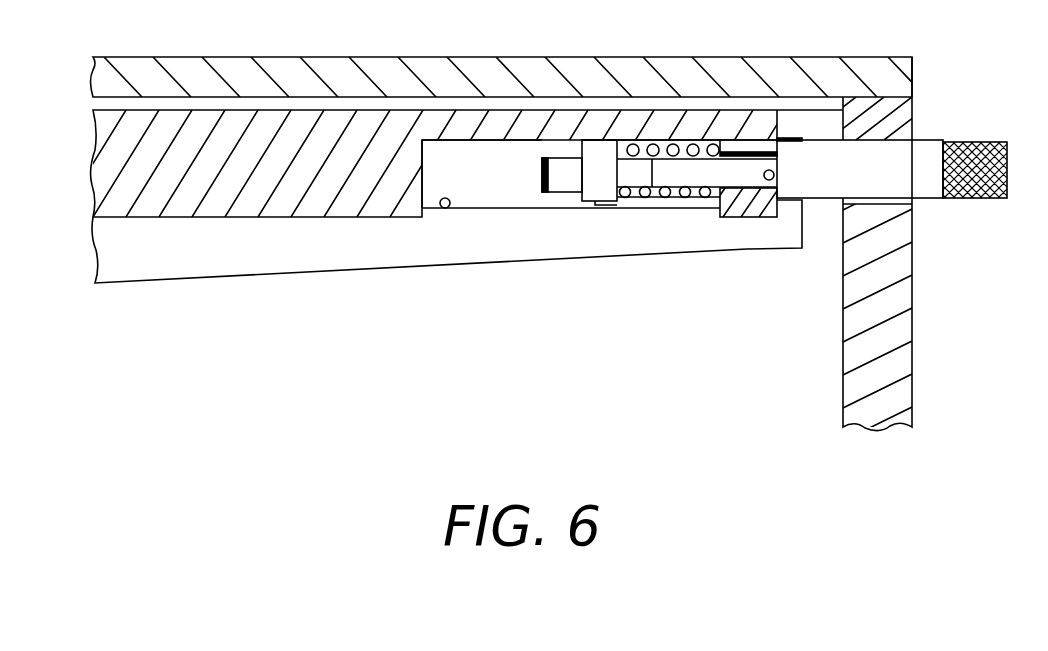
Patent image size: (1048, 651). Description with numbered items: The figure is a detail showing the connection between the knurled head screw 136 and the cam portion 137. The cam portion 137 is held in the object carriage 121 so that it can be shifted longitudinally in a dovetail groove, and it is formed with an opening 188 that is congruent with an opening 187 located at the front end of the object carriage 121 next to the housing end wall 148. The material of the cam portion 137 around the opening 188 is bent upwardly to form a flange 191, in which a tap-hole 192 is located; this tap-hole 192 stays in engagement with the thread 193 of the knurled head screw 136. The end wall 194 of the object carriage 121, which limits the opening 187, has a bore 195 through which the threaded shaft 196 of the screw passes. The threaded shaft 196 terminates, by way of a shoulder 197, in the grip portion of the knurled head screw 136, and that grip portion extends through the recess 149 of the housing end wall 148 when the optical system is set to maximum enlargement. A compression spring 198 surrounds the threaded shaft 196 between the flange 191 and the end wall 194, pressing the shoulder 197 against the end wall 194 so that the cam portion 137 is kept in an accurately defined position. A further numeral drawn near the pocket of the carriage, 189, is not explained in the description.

The object carriage 121 is at (117, 133).
The knurled head screw 136 is at (987, 142).
The cam portion 137 is at (231, 258).
The end wall 148 is at (913, 321).
The recess 149 is at (893, 208).
The opening 187 is at (478, 141).
The opening 188 is at (446, 208).
The pocket 189 is at (512, 183).
The flange 191 is at (615, 140).
The tap-hole 192 is at (593, 205).
The thread 193 is at (562, 158).
The end wall 194 is at (762, 218).
The bore 195 is at (767, 140).
The threaded shaft 196 is at (713, 188).
The shoulder 197 is at (778, 177).
The compression spring 198 is at (640, 198).